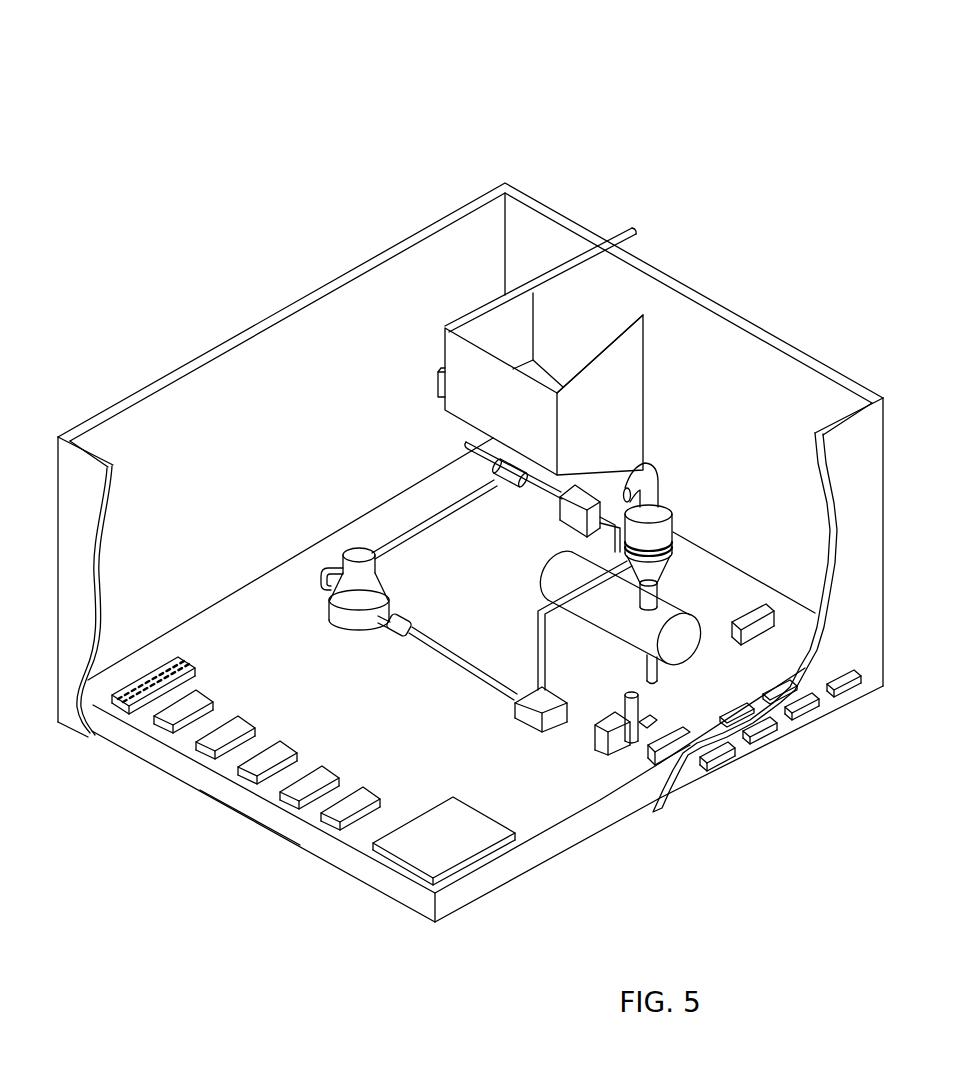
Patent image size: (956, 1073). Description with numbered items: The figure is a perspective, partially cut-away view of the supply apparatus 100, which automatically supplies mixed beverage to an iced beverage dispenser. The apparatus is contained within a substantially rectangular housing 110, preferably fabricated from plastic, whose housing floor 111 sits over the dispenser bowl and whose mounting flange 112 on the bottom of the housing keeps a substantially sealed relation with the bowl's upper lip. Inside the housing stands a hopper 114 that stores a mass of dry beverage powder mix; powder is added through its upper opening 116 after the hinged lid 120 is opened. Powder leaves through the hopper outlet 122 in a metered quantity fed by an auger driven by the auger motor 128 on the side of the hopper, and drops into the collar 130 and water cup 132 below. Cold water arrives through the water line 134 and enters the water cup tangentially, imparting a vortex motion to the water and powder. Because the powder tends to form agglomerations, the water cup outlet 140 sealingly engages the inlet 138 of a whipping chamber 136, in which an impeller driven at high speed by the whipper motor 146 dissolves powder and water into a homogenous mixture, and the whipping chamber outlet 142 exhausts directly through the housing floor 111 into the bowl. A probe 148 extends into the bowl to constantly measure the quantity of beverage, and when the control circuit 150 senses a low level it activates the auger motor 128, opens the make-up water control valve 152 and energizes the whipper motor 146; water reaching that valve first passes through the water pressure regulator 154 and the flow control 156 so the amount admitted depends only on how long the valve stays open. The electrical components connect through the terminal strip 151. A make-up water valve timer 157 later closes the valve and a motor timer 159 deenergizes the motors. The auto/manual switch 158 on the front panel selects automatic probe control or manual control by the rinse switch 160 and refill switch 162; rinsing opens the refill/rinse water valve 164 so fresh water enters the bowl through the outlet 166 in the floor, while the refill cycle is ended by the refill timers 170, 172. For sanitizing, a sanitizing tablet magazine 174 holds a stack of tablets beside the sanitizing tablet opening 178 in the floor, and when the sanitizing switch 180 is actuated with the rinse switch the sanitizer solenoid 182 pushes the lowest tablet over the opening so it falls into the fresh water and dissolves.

The supply apparatus 100 is at (660, 97).
The housing 110 is at (332, 282).
The housing floor 111 is at (553, 826).
The mounting flange 112 is at (375, 875).
The hopper 114 is at (642, 402).
The upper opening 116 is at (634, 321).
The hinged lid 120 is at (519, 291).
The hopper outlet 122 is at (646, 481).
The auger motor 128 is at (438, 387).
The collar 130 is at (660, 522).
The water cup 132 is at (668, 549).
The water line 134 is at (540, 610).
The whipping chamber 136 is at (692, 643).
The inlet 138 is at (656, 601).
The water cup outlet 140 is at (657, 583).
The whipping chamber outlet 142 is at (646, 672).
The whipper motor 146 is at (563, 578).
The probe 148 is at (763, 603).
The control circuit 150 is at (461, 804).
The terminal strip 151 is at (120, 702).
The make-up water control valve 152 is at (531, 720).
The water pressure regulator 154 is at (342, 621).
The flow control 156 is at (396, 617).
The make-up water valve timer 157 is at (204, 695).
The auto/manual switch 158 is at (847, 684).
The motor timer 159 is at (243, 721).
The rinse switch 160 is at (285, 746).
The refill switch 162 is at (762, 733).
The refill/rinse water valve 164 is at (560, 520).
The outlet 166 is at (615, 518).
The refill timer 170 is at (328, 770).
The refill timer 172 is at (368, 793).
The sanitizing tablet magazine 174 is at (624, 710).
The sanitizing tablet opening 178 is at (644, 717).
The sanitizing switch 180 is at (721, 758).
The sanitizer solenoid 182 is at (598, 738).